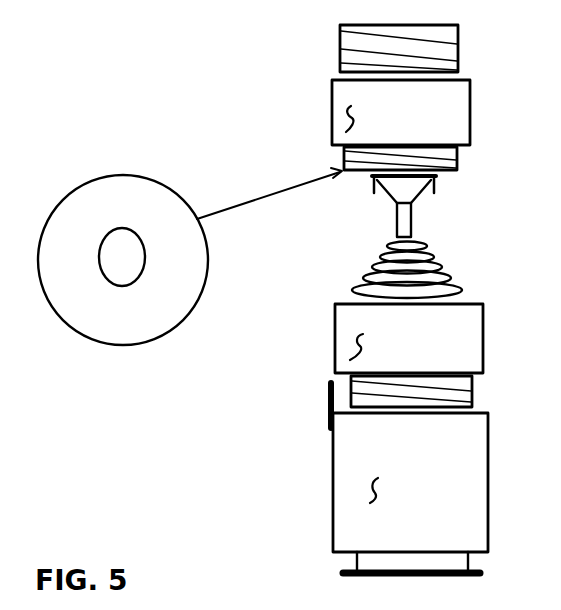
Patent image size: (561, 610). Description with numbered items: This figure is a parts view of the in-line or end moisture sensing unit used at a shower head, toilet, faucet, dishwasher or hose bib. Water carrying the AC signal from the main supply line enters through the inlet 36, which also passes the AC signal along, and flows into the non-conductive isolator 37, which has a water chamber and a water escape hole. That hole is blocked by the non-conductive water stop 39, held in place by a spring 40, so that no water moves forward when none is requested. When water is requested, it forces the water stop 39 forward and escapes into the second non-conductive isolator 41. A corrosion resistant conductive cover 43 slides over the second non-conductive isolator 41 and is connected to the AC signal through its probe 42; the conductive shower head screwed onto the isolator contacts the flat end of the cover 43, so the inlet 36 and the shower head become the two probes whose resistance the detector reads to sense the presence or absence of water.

The inlet 36 is at (340, 50).
The non-conductive isolator 37 is at (338, 124).
The non-conductive water stop 39 is at (383, 204).
The spring 40 is at (358, 272).
The second non-conductive isolator 41 is at (350, 341).
The probe 42 is at (328, 388).
The corrosion resistant conductive cover 43 is at (372, 480).